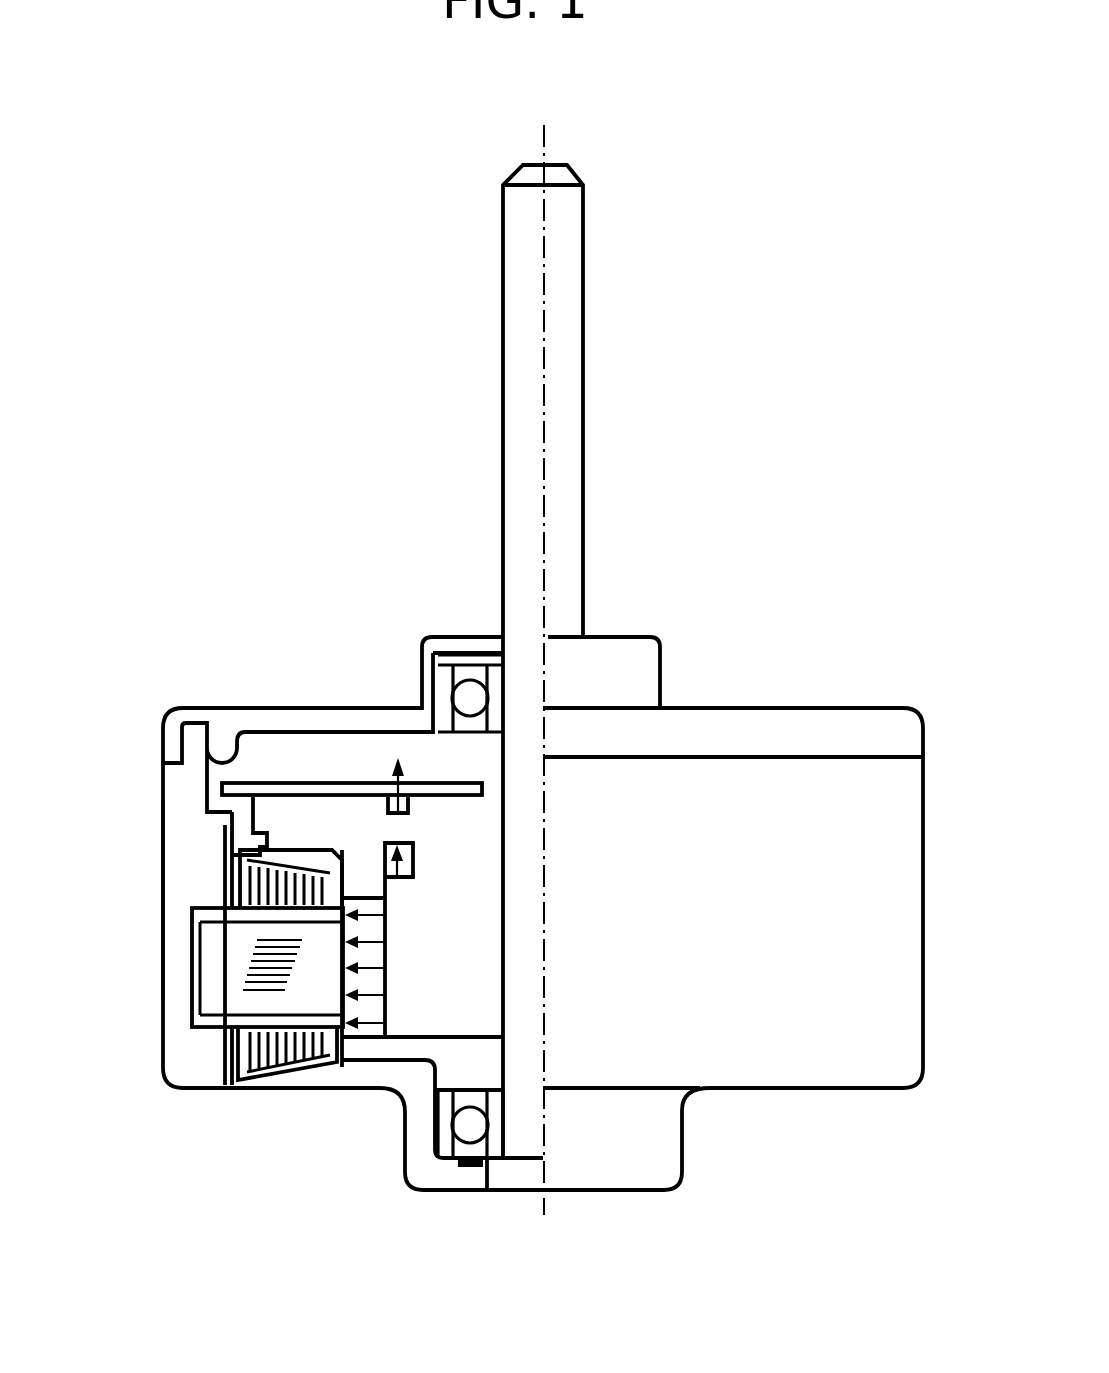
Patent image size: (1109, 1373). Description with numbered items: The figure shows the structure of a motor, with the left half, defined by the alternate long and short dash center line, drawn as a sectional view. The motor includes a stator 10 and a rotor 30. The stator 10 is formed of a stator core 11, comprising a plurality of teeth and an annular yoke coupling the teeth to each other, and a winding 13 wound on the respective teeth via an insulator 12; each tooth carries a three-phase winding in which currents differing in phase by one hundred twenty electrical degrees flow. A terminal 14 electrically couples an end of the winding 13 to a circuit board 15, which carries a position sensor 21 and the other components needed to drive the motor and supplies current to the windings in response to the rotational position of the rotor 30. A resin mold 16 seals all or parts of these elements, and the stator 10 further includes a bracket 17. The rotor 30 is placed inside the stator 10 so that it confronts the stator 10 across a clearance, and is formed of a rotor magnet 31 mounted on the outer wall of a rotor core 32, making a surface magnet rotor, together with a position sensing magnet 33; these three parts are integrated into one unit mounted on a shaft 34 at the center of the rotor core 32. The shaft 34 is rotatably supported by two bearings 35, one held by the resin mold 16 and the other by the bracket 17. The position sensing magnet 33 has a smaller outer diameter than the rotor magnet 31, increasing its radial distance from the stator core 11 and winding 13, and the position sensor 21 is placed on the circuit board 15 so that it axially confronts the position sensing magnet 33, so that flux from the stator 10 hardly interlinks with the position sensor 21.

The stator 10 is at (165, 700).
The stator core 11 is at (218, 980).
The insulator 12 is at (217, 1088).
The winding 13 is at (293, 1057).
The terminal 14 is at (248, 840).
The circuit board 15 is at (297, 783).
The resin mold 16 is at (187, 878).
The bracket 17 is at (220, 722).
The position sensor 21 is at (398, 797).
The rotor 30 is at (473, 1053).
The rotor magnet 31 is at (370, 937).
The rotor core 32 is at (465, 942).
The position sensing magnet 33 is at (414, 845).
The shaft 34 is at (566, 520).
The bearing 35 is at (480, 690).